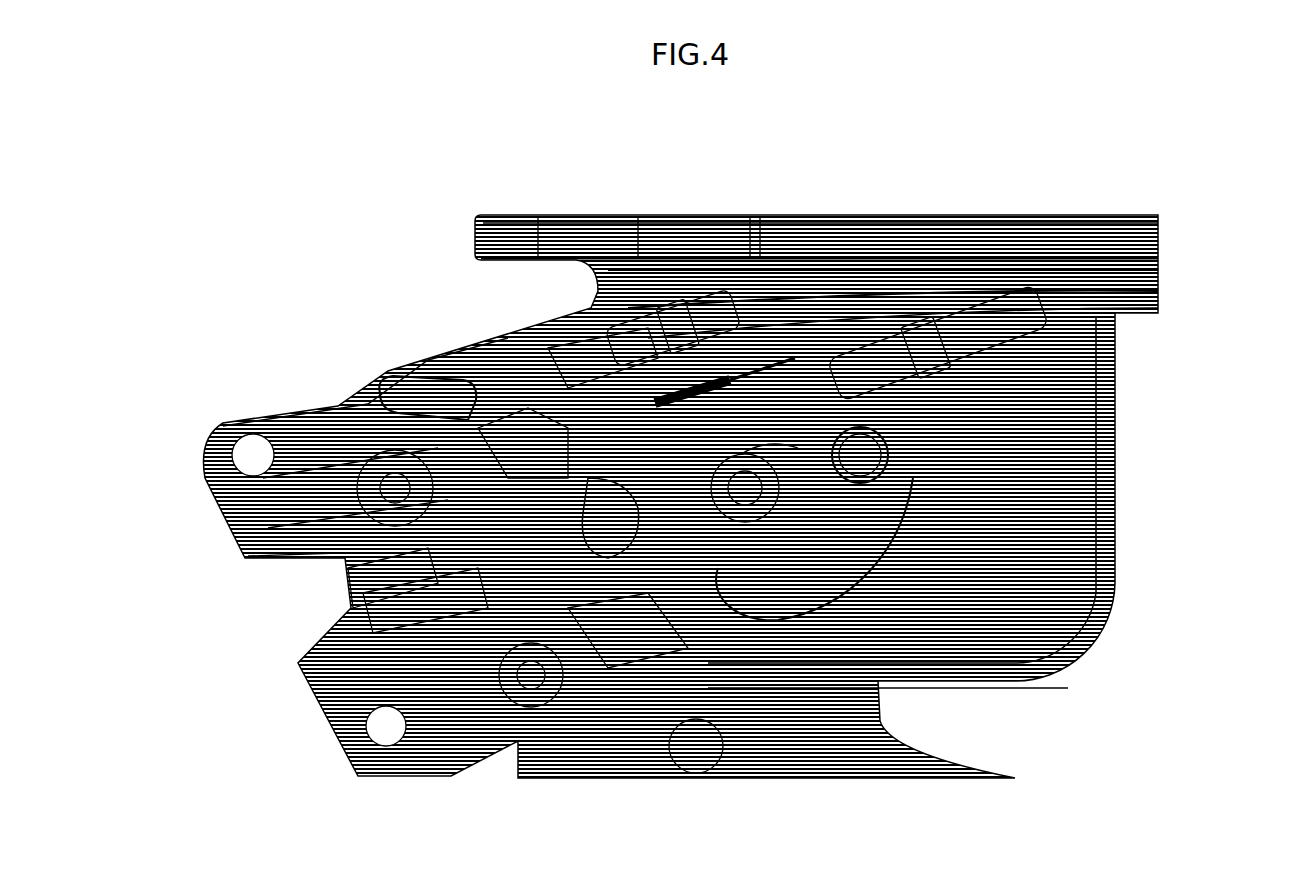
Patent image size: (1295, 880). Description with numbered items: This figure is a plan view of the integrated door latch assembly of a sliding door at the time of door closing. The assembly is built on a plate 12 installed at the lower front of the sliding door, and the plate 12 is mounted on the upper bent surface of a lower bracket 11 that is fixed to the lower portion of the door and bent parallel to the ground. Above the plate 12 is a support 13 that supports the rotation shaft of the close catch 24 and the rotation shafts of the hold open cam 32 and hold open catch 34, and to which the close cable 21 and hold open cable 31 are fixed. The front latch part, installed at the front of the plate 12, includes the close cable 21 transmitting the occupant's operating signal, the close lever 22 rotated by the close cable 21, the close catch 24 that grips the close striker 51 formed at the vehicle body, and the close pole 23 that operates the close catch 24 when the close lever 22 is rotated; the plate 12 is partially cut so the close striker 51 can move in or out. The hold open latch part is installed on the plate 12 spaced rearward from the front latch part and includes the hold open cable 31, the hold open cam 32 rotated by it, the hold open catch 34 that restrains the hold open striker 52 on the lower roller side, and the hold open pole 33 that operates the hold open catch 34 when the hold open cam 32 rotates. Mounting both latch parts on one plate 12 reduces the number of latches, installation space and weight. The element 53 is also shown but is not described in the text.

The lower bracket 11 is at (1073, 436).
The plate 12 is at (418, 352).
The support 13 is at (530, 427).
The close cable 21 is at (567, 353).
The close lever 22 is at (465, 407).
The close pole 23 is at (597, 623).
The close catch 24 is at (340, 553).
The hold open cable 31 is at (787, 350).
The hold open cam 32 is at (743, 398).
The hold open pole 33 is at (607, 495).
The hold open catch 34 is at (886, 500).
The close striker 51 is at (357, 592).
The hold open striker 52 is at (897, 462).
The lower plate 53 is at (797, 740).